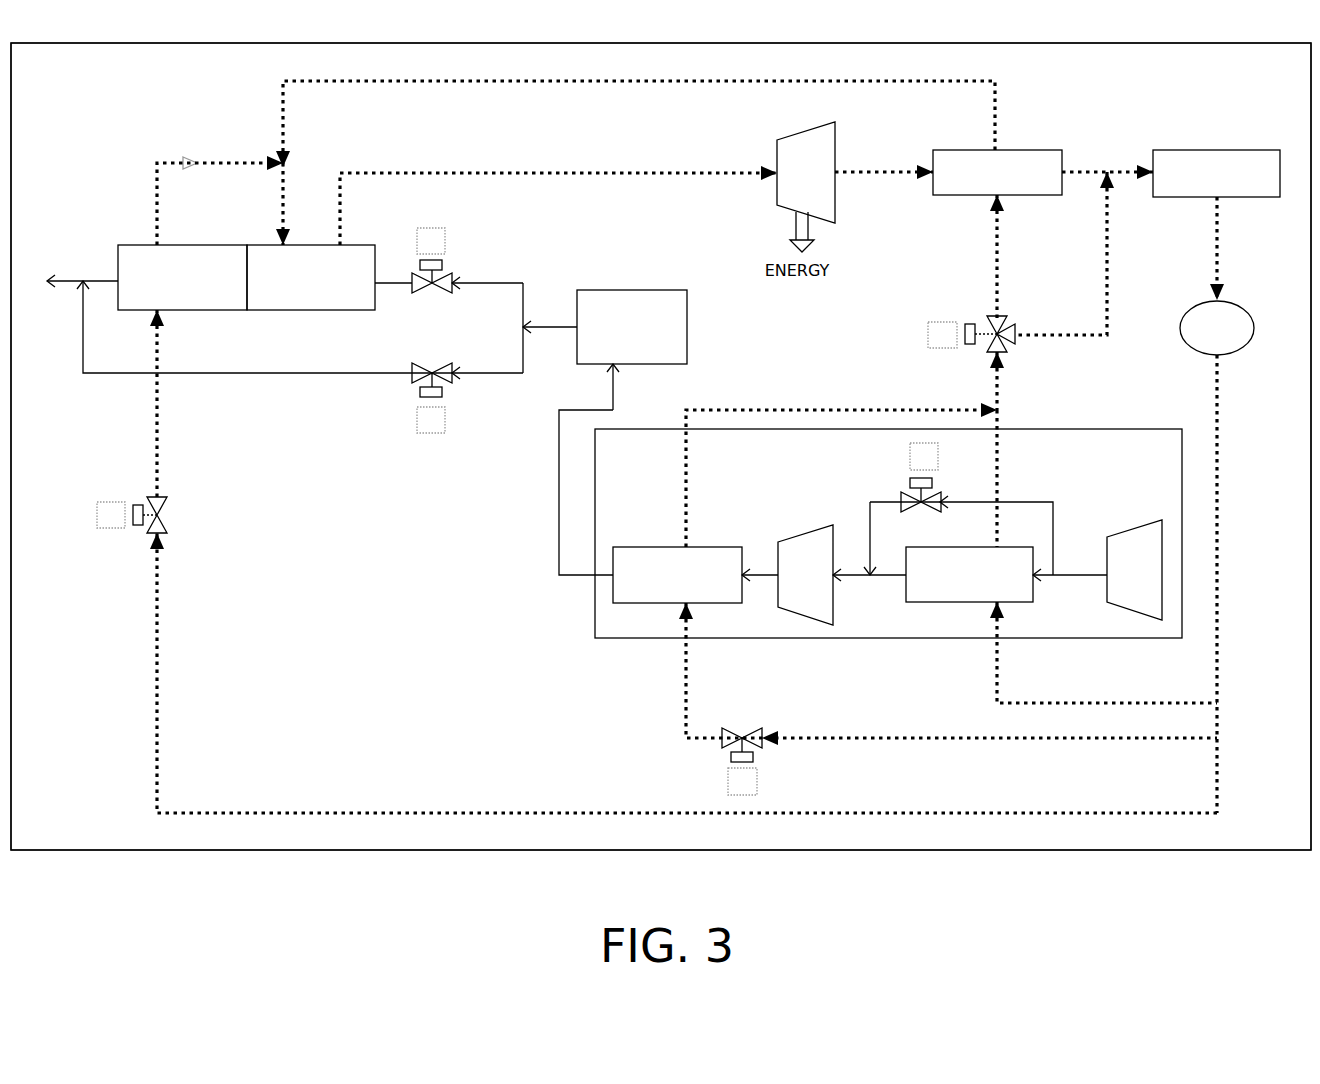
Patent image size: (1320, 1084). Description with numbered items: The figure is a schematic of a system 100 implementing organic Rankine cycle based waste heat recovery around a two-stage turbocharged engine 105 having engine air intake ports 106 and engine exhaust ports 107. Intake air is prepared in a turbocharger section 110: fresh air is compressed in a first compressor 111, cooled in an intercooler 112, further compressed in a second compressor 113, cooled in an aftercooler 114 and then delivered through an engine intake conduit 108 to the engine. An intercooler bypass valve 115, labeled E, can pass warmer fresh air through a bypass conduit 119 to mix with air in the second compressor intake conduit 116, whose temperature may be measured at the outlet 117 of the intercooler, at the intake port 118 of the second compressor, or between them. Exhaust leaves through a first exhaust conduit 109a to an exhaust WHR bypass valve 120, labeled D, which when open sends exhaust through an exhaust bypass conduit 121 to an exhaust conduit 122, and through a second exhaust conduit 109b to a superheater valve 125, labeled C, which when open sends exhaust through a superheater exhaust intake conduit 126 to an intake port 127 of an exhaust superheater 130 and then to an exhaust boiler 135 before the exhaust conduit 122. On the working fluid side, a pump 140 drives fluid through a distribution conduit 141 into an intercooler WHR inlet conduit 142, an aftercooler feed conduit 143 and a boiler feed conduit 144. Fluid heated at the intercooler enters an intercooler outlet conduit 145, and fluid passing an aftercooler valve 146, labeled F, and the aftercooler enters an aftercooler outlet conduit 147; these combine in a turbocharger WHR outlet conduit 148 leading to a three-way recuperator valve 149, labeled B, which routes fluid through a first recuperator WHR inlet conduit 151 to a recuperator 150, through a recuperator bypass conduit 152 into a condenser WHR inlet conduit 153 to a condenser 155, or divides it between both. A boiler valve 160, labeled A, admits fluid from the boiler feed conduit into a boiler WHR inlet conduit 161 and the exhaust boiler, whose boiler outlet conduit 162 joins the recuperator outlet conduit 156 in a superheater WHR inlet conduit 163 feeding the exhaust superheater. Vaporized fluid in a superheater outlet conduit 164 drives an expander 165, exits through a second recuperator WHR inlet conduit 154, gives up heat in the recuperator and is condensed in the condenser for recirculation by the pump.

The system 100 is at (661, 446).
The engine 105 is at (680, 290).
The engine air intake port 106 is at (623, 366).
The engine exhaust port 107 is at (577, 322).
The engine intake conduit 108 is at (559, 492).
The first exhaust conduit 109a is at (528, 360).
The second exhaust conduit 109b is at (515, 283).
The turbocharger section 110 is at (595, 640).
The first compressor 111 is at (1158, 520).
The intercooler 112 is at (1040, 600).
The second compressor 113 is at (792, 542).
The aftercooler 114 is at (700, 547).
The intercooler bypass valve 115 is at (905, 500).
The second compressor intake conduit 116 is at (838, 578).
The outlet of the intercooler 117 is at (903, 573).
The intake port of the second compressor 118 is at (867, 582).
The bypass conduit 119 is at (868, 500).
The exhaust WHR bypass valve 120 is at (410, 380).
The exhaust bypass conduit 121 is at (193, 375).
The exhaust conduit 122 is at (62, 290).
The superheater valve 125 is at (450, 272).
The superheater exhaust intake conduit 126 is at (382, 278).
The intake port of the exhaust superheater 127 is at (378, 284).
The exhaust superheater 130 is at (320, 312).
The exhaust boiler 135 is at (215, 312).
The pump 140 is at (1243, 310).
The distribution conduit 141 is at (1220, 572).
The intercooler WHR inlet conduit 142 is at (1175, 703).
The aftercooler feed conduit 143 is at (900, 738).
The boiler feed conduit 144 is at (900, 813).
The intercooler outlet conduit 145 is at (1000, 490).
The aftercooler valve 146 is at (755, 730).
The aftercooler outlet conduit 147 is at (765, 410).
The turbocharger WHR outlet conduit 148 is at (1000, 392).
The three-way recuperator valve 149 is at (988, 316).
The recuperator 150 is at (1030, 150).
The first recuperator WHR inlet conduit 151 is at (1000, 280).
The recuperator bypass conduit 152 is at (1112, 268).
The condenser WHR inlet conduit 153 is at (1088, 172).
The second recuperator WHR inlet conduit 154 is at (870, 172).
The condenser 155 is at (1225, 150).
The recuperator outlet conduit 156 is at (990, 84).
The boiler valve 160 is at (165, 498).
The boiler WHR inlet conduit 161 is at (157, 410).
The boiler outlet conduit 162 is at (213, 165).
The superheater WHR inlet conduit 163 is at (283, 197).
The superheater outlet conduit 164 is at (378, 173).
The expander 165 is at (790, 135).